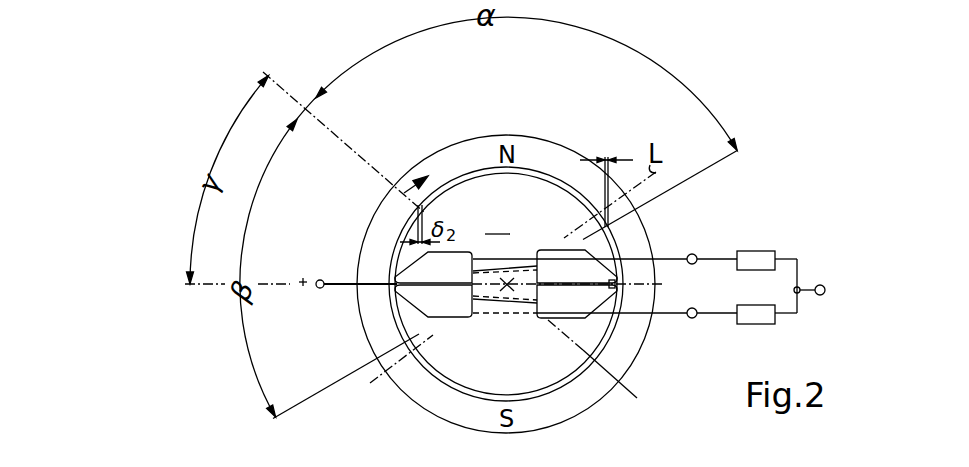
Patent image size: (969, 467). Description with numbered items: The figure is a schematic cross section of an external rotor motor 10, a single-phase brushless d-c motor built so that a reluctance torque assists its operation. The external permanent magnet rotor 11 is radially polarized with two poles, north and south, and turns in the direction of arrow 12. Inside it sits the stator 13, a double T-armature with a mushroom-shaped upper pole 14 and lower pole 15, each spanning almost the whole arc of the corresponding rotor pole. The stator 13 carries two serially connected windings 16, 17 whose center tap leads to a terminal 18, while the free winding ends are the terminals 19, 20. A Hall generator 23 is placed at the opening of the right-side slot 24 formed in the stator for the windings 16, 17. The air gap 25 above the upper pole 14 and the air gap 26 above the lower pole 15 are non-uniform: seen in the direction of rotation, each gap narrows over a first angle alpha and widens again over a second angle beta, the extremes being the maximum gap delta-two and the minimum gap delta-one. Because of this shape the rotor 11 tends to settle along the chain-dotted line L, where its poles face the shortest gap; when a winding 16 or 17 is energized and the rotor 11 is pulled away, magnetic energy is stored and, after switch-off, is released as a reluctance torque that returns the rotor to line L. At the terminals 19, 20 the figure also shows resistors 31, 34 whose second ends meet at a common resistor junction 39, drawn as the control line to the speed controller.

The external rotor motor 10 is at (440, 220).
The external permanent magnet rotor 11 is at (373, 246).
The arrow 12 is at (407, 190).
The stator 13 is at (505, 259).
The upper pole 14 is at (604, 157).
The lower pole 15 is at (543, 367).
The winding 16 is at (512, 259).
The winding 17 is at (520, 298).
The terminal 18 is at (332, 286).
The free terminal 19 is at (672, 259).
The free terminal 20 is at (658, 316).
The Hall generator 23 is at (616, 283).
The right-side slot 24 is at (580, 302).
The air gap 25 is at (463, 172).
The air gap 26 is at (597, 353).
The resistor 31 is at (760, 259).
The resistor 34 is at (756, 321).
The common resistor junction 39 is at (848, 272).